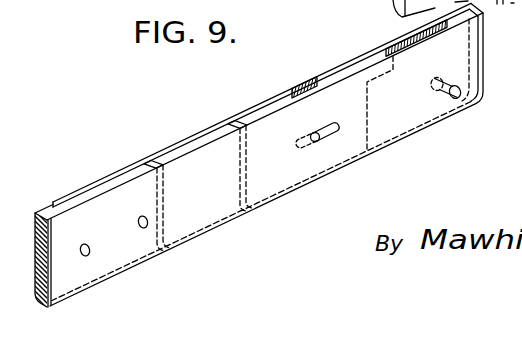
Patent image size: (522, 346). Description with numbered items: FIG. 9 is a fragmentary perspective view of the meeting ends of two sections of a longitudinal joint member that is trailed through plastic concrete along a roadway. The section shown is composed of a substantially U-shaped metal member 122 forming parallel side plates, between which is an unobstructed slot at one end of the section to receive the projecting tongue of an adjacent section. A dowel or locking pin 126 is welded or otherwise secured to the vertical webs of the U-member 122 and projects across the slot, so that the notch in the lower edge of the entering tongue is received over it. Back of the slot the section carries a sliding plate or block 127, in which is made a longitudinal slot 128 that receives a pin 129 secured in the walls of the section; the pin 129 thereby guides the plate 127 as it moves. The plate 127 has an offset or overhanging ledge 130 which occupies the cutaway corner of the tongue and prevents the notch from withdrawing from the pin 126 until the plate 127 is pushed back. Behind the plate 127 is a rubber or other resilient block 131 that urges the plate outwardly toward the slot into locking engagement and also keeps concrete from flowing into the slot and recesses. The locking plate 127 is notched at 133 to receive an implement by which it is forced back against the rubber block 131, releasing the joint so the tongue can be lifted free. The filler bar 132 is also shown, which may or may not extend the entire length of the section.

The U-shaped member 122 is at (402, 123).
The dowel or locking pin 126 is at (460, 91).
The sliding plate 127 is at (258, 113).
The longitudinal slot 128 is at (303, 148).
The pin 129 is at (320, 139).
The overhanging portion or ledge 130 is at (372, 59).
The rubber block 131 is at (180, 150).
The filler bar 132 is at (44, 213).
The notch 133 is at (307, 83).